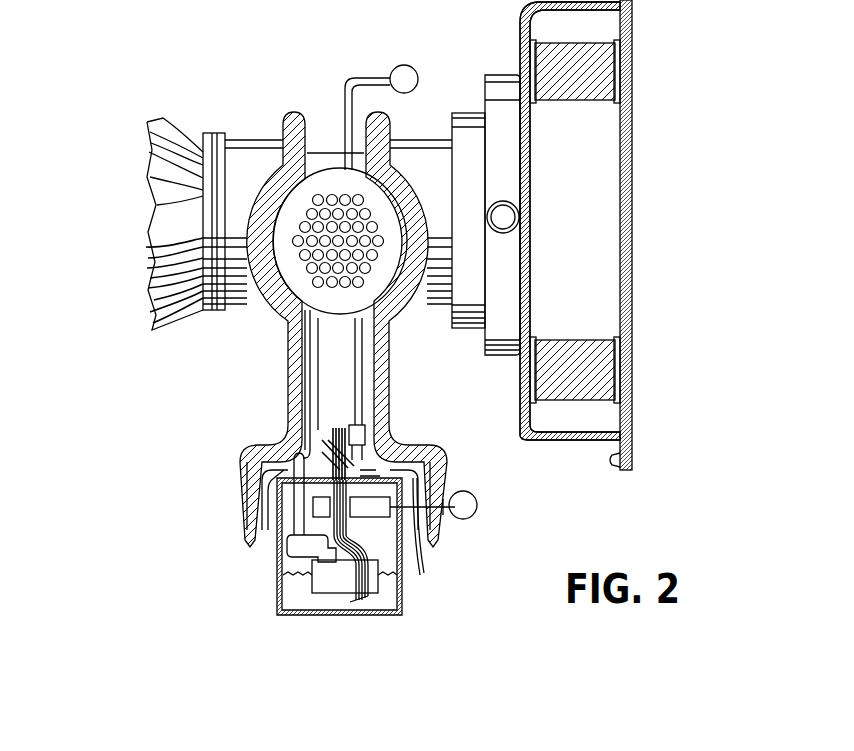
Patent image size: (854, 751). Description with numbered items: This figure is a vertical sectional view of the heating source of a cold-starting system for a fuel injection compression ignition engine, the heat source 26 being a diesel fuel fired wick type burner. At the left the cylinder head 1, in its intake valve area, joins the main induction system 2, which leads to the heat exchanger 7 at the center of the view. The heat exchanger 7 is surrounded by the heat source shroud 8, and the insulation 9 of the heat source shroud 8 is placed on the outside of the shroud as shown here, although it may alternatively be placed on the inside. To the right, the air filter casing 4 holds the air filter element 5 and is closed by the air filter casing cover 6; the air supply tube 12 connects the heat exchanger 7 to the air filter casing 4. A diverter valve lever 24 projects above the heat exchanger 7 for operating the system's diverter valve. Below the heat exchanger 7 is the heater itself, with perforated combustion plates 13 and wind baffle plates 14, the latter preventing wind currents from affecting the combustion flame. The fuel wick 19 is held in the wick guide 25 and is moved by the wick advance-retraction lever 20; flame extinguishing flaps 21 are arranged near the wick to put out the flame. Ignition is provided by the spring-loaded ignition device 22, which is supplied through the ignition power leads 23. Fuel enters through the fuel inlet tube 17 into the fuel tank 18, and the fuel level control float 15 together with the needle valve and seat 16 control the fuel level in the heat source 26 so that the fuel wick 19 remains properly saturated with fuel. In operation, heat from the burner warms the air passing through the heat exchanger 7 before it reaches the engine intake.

The cylinder head 1 is at (178, 135).
The main induction system 2 is at (262, 147).
The air filter casing 4 is at (509, 80).
The air filter element 5 is at (592, 87).
The air filter casing cover 6 is at (617, 468).
The heat exchanger 7 is at (380, 223).
The heat source shroud 8 is at (366, 126).
The insulation 9 is at (376, 344).
The air supply tube 12 is at (519, 212).
The perforated combustion plates 13 is at (318, 365).
The wind baffle plates 14 is at (252, 545).
The fuel level control float 15 is at (338, 585).
The needle valve and seat 16 is at (297, 520).
The fuel inlet tube 17 is at (258, 492).
The fuel tank 18 is at (275, 590).
The fuel wick 19 is at (347, 458).
The wick advance-retraction lever 20 is at (478, 505).
The flame extinguishing flaps 21 is at (330, 447).
The spring-loaded ignition device 22 is at (365, 435).
The ignition power leads 23 is at (420, 575).
The diverter valve lever 24 is at (375, 72).
The wick guide 25 is at (380, 473).
The heat source 26 is at (388, 378).